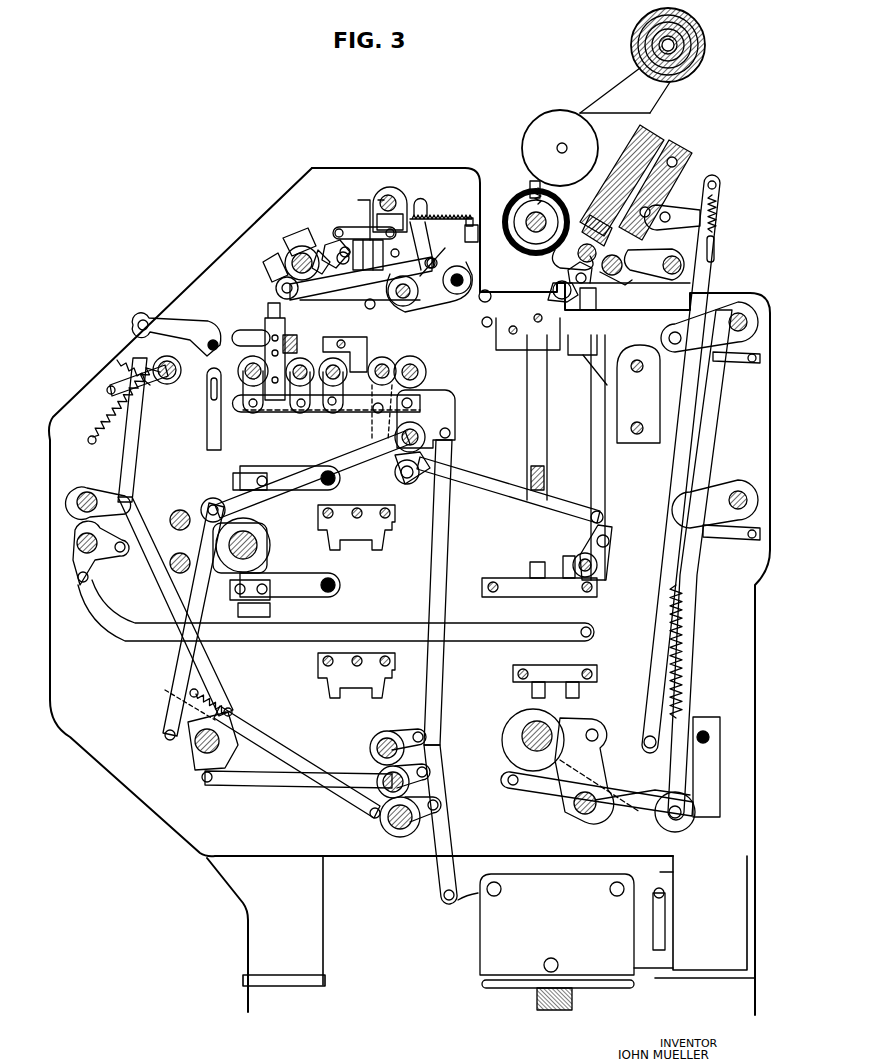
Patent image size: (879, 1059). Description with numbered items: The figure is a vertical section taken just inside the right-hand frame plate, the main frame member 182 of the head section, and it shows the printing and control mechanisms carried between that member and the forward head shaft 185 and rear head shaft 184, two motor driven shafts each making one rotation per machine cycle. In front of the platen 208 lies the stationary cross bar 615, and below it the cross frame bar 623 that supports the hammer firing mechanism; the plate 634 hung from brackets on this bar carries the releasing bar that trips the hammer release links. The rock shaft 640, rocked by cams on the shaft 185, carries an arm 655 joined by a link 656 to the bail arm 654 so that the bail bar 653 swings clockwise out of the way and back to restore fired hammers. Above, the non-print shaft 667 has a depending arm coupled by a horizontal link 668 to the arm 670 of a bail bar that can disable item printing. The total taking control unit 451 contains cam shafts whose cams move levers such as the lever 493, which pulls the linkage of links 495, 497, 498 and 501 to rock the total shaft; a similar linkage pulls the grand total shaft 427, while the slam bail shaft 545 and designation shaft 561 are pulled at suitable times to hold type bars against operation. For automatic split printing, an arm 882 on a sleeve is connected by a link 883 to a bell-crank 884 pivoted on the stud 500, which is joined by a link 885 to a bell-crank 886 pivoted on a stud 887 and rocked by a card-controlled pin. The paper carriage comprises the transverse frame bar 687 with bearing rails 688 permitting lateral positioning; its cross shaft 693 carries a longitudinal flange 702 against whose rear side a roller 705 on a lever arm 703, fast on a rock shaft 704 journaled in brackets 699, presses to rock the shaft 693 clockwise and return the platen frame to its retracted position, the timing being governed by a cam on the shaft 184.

The main frame member 182 is at (229, 248).
The rear head shaft 184 is at (523, 741).
The forward head shaft 185 is at (268, 552).
The platen 208 is at (527, 205).
The grand total shaft 427 is at (382, 352).
The total taking control unit 451 is at (480, 947).
The lever 493 is at (466, 902).
The link 495 is at (444, 868).
The link 497 is at (437, 674).
The link 498 is at (401, 475).
The stud 500 is at (408, 450).
The link 501 is at (353, 408).
The slam bail shaft 545 is at (327, 342).
The designation shaft 561 is at (258, 362).
The stationary cross bar 615 is at (478, 236).
The cross frame bar 623 is at (367, 240).
The plate 634 is at (360, 293).
The rock shaft 640 is at (299, 247).
The bail bar 653 is at (429, 276).
The bail arm 654 is at (476, 264).
The arm 655 is at (279, 284).
The link 656 is at (419, 251).
The non-print shaft 667 is at (389, 203).
The horizontal link 668 is at (365, 212).
The arm 670 is at (332, 236).
The transverse frame bar 687 is at (668, 133).
The bearing rails 688 is at (690, 152).
The cross shaft 693 is at (595, 248).
The brackets 699 is at (533, 327).
The longitudinal flange 702 is at (578, 256).
The lever arm 703 is at (574, 277).
The rock shaft 704 is at (563, 298).
The roller 705 is at (589, 285).
The arm 882 is at (421, 192).
The link 883 is at (431, 230).
The bell-crank 884 is at (414, 404).
The link 885 is at (498, 484).
The bell-crank 886 is at (578, 538).
The stud 887 is at (570, 549).